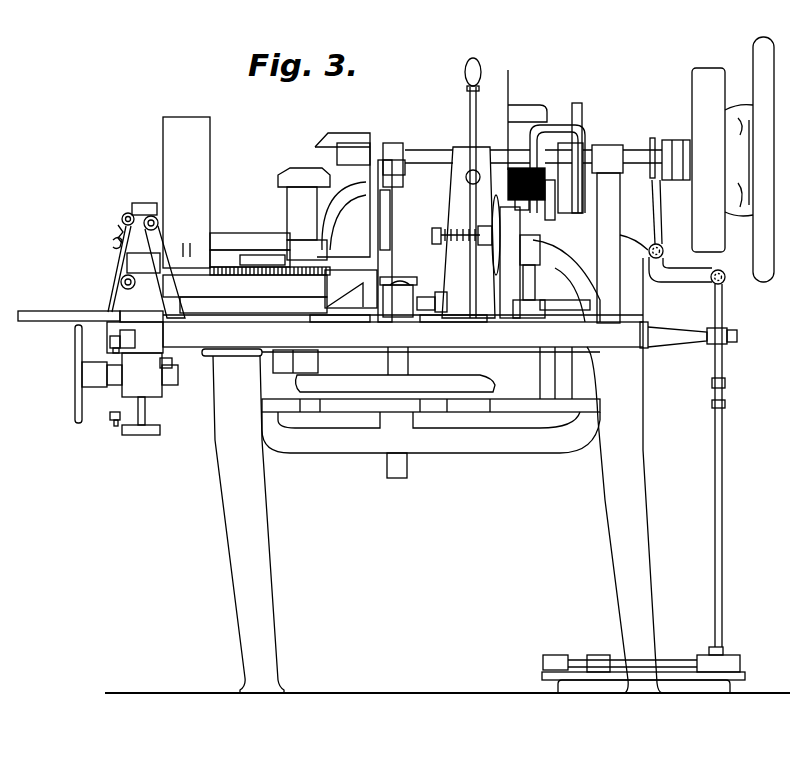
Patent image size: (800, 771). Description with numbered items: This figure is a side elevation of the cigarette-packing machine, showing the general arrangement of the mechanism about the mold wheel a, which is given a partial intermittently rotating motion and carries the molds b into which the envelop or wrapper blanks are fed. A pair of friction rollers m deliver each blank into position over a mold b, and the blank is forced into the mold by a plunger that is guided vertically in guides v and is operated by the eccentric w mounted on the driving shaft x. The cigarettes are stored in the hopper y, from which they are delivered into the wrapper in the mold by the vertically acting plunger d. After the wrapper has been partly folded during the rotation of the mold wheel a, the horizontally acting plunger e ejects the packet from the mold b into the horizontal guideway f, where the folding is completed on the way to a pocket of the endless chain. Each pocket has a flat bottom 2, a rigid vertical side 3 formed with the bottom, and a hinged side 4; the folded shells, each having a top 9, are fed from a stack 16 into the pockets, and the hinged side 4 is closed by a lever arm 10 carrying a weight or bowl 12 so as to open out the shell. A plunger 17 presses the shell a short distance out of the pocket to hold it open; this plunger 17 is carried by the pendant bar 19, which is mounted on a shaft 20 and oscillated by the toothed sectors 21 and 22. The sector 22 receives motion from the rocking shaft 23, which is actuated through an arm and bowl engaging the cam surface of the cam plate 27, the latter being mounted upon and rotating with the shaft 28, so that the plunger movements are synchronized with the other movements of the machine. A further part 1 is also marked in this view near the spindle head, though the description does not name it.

The stack 16 is at (173, 130).
The cam plate 27 is at (142, 208).
The shaft 20 is at (122, 218).
The toothed sector 21 is at (116, 230).
The toothed sector 22 is at (114, 246).
The pendant bar 19 is at (118, 264).
The rocking shaft 23 is at (121, 283).
The plunger 17 is at (108, 311).
The vertical side 3 is at (135, 314).
The weight or bowl 12 is at (108, 342).
The lever arm 10 is at (113, 350).
The flat bottom 2 is at (126, 374).
The hinged side 4 is at (165, 360).
The top 9 is at (150, 420).
The shaft 28 is at (232, 245).
The horizontal guideway f is at (216, 312).
The molds b is at (292, 312).
The horizontally acting plunger e is at (351, 289).
The mold wheel a is at (454, 464).
The friction rollers m is at (421, 295).
The spindle head 1 is at (518, 280).
The vertically acting plunger d is at (546, 308).
The guides v is at (386, 216).
The eccentric w is at (394, 150).
The driving shaft x is at (425, 152).
The hopper y is at (524, 104).